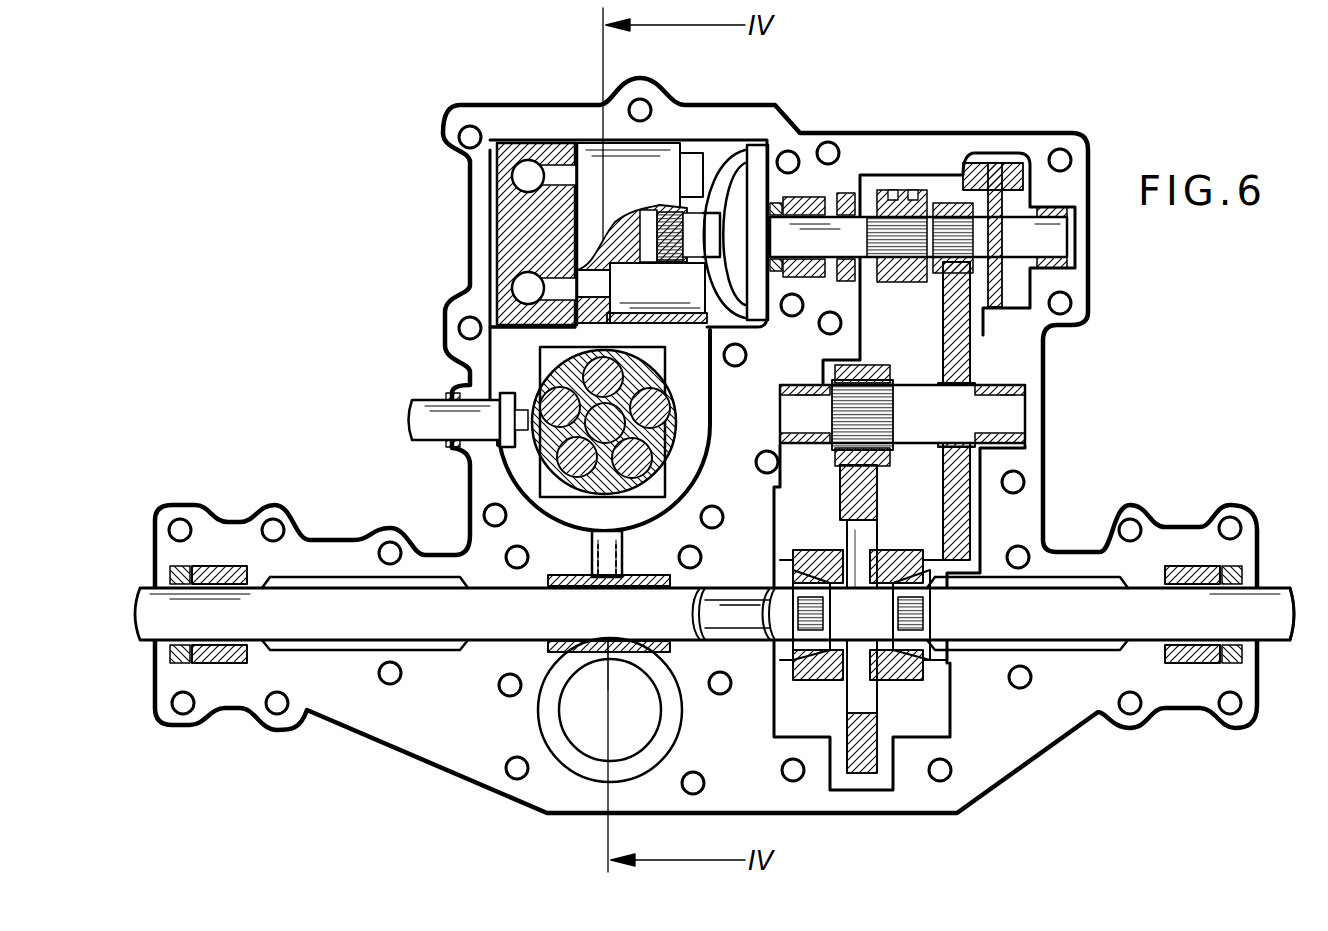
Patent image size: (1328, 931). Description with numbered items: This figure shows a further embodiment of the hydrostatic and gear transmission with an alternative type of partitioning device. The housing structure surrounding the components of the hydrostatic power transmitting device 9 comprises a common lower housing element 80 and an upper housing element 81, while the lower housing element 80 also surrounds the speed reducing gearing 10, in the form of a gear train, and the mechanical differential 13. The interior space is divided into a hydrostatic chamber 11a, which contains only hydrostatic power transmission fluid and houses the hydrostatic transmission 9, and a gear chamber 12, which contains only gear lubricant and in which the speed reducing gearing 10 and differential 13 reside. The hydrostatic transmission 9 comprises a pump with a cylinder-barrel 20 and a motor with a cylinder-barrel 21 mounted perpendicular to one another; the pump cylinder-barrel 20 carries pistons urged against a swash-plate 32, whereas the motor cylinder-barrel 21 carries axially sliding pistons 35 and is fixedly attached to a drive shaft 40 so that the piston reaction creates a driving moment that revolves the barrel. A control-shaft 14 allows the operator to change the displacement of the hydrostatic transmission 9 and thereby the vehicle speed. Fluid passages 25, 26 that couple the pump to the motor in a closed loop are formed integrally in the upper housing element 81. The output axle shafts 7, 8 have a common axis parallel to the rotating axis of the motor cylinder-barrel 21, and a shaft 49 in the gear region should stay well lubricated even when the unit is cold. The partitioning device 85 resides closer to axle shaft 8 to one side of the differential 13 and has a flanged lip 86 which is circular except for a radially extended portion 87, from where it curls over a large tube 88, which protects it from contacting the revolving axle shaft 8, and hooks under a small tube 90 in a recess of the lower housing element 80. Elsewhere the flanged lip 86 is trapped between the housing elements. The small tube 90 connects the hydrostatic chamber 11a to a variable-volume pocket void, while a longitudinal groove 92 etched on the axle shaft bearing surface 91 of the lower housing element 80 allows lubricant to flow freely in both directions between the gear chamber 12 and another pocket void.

The output axle shaft 7 is at (1268, 632).
The output axle shaft 8 is at (176, 635).
The hydrostatic transmission 9 is at (445, 232).
The speed reducing gearing 10 is at (1100, 383).
The hydrostatic chamber 11a is at (532, 340).
The gear chamber 12 is at (925, 510).
The mechanical differential 13 is at (950, 698).
The control-shaft 14 is at (446, 433).
The pump cylinder-barrel 20 is at (660, 395).
The motor cylinder-barrel 21 is at (655, 197).
The fluid passage 25 is at (528, 176).
The fluid passage 26 is at (528, 288).
The swash-plate 32 is at (655, 368).
The piston 35 is at (675, 297).
The drive shaft 40 is at (1015, 251).
The shaft 49 is at (927, 428).
The lower housing element 80 is at (757, 428).
The upper housing element 81 is at (546, 165).
The partitioning device 85 is at (626, 725).
The flanged lip 86 is at (616, 768).
The radially extended portion 87 is at (590, 572).
The large tube 88 is at (468, 528).
The small tube 90 is at (560, 575).
The axle shaft bearing surface 91 is at (607, 542).
The longitudinal groove 92 is at (745, 615).